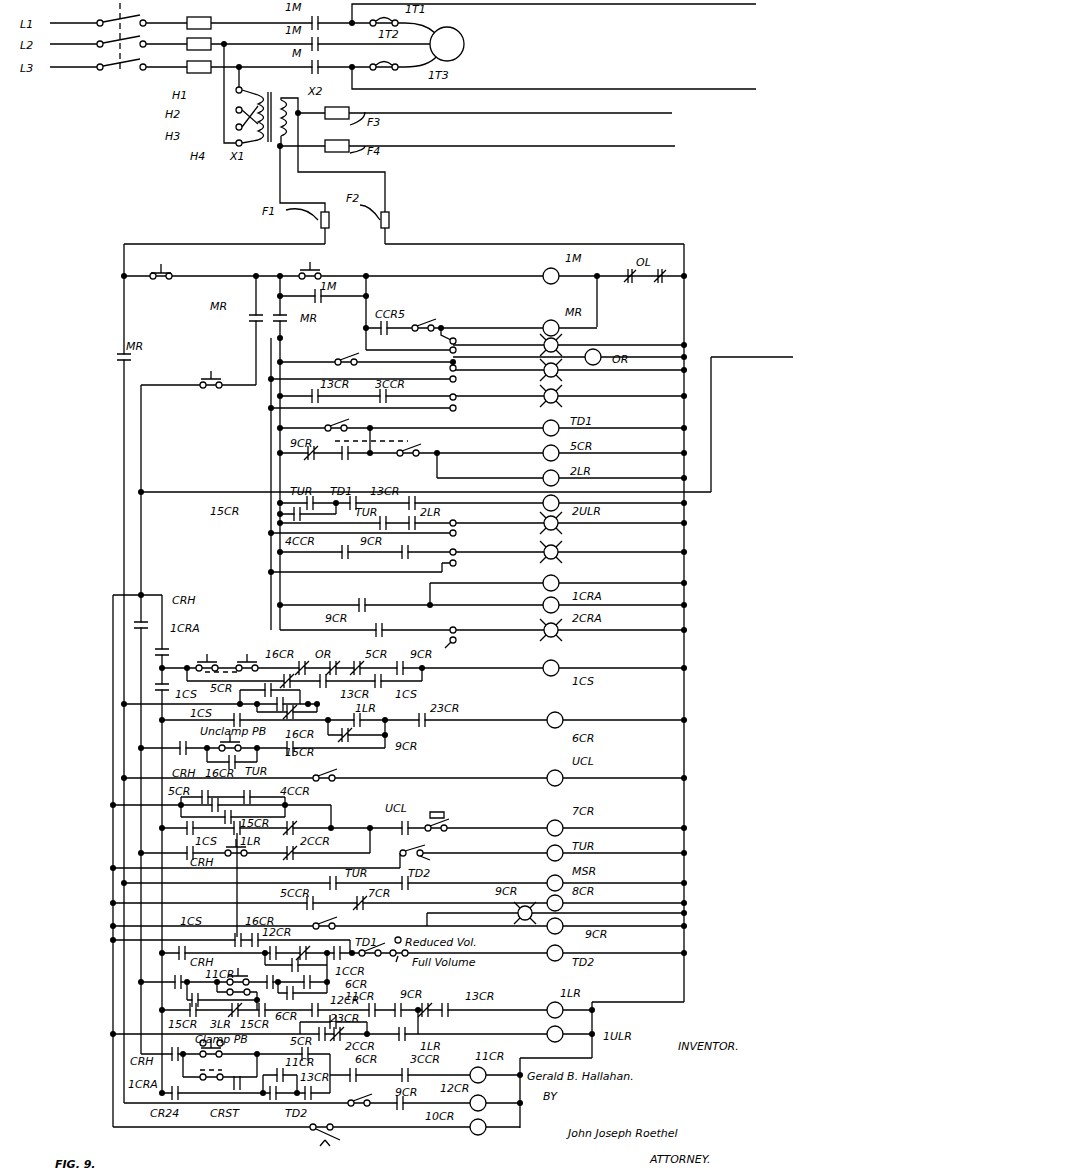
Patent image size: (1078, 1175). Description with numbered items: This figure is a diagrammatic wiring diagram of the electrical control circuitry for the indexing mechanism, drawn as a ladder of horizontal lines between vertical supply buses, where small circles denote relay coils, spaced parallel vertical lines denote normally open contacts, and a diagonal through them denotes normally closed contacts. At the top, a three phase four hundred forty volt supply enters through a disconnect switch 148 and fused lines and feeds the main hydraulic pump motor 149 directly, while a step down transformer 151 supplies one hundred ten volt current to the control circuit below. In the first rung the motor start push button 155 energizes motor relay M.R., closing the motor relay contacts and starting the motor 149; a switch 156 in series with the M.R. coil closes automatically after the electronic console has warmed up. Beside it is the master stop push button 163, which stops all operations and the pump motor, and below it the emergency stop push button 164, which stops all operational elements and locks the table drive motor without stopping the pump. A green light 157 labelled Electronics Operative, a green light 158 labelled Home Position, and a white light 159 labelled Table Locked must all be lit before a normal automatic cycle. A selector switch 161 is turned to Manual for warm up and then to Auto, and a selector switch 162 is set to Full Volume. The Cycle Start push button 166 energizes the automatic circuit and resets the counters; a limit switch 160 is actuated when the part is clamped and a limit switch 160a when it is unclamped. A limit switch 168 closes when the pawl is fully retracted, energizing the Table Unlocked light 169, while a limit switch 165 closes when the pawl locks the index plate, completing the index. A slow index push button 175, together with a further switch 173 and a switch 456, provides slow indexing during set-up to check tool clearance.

The disconnect switch 148 is at (127, 68).
The main hydraulic pump motor 149 is at (490, 25).
The step down transformer 151 is at (290, 78).
The motor start push button 155 is at (318, 266).
The switch 156 is at (428, 322).
The green light 157 is at (560, 343).
The green light 158 is at (558, 560).
The white light 159 is at (558, 637).
The limit switch 160 is at (362, 1098).
The limit switch 160a is at (328, 772).
The selector switch 161 is at (372, 590).
The selector switch 162 is at (395, 958).
The master stop push button 163 is at (168, 268).
The emergency stop push button 164 is at (226, 365).
The limit switch 165 is at (330, 920).
The Cycle Start push button 166 is at (210, 658).
The limit switch 168 is at (415, 848).
The Table Unlocked light 169 is at (558, 530).
The switch 173 is at (355, 412).
The slow index push button 175 is at (242, 860).
The switch 456 is at (350, 357).